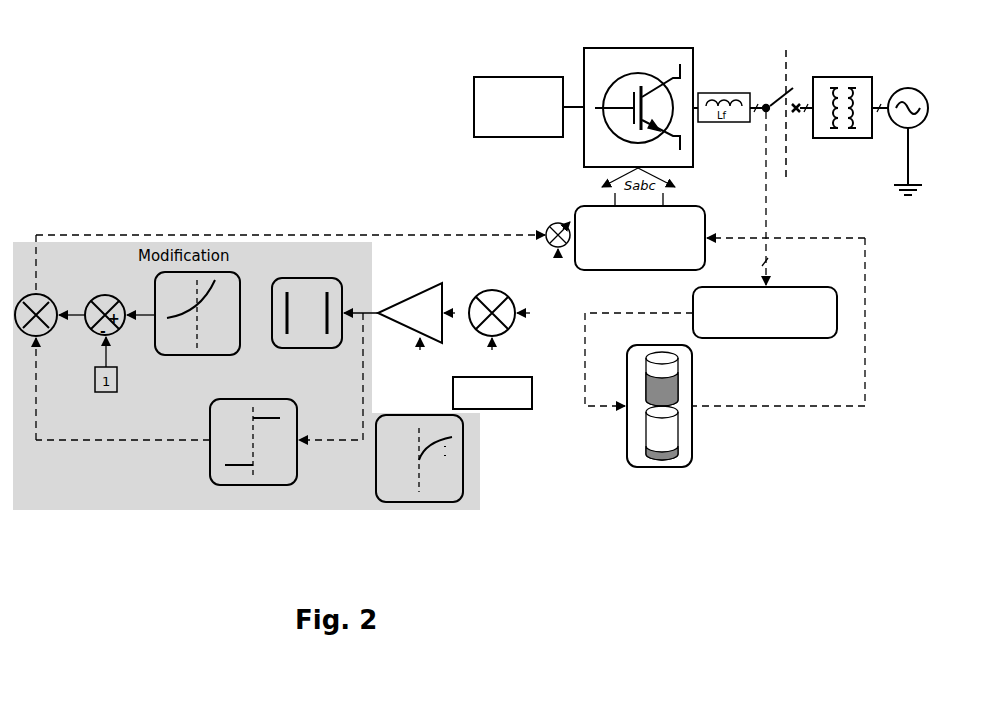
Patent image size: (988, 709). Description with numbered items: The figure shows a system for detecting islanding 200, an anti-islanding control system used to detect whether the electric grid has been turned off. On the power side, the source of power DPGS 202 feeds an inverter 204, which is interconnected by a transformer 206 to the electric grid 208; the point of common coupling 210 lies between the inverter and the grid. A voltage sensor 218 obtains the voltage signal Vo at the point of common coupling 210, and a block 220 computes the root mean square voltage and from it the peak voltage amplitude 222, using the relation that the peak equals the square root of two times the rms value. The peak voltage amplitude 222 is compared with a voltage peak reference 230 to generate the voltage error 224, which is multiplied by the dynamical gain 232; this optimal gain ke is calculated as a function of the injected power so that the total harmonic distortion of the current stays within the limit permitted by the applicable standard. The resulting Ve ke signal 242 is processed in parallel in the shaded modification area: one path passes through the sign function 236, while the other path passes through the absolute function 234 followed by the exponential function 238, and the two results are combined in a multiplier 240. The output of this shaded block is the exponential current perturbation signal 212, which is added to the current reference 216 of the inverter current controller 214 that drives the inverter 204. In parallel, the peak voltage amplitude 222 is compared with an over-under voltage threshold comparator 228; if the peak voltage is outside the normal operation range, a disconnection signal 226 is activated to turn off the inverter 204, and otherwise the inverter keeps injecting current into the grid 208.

The system for detecting islanding 200 is at (106, 112).
The source of power DPGS 202 is at (518, 107).
The inverter 204 is at (638, 96).
The transformer 206 is at (842, 96).
The electric grid 208 is at (908, 127).
The point of common coupling 210 is at (790, 124).
The exponential current perturbation signal 212 is at (290, 222).
The inverter current controller 214 is at (640, 238).
The current reference 216 is at (557, 250).
The voltage sensor 218 is at (786, 198).
The root mean square voltage block 220 is at (765, 312).
The peak voltage amplitude 222 is at (638, 345).
The voltage error 224 is at (487, 313).
The disconnection signal 226 is at (779, 422).
The over-under voltage threshold comparator 228 is at (659, 416).
The voltage peak reference 230 is at (492, 393).
The dynamical gain 232 is at (466, 462).
The absolute function 234 is at (307, 324).
The sign function 236 is at (253, 453).
The exponential function 238 is at (197, 324).
The multiplier 240 is at (50, 290).
The Ve ke signal 242 is at (403, 316).